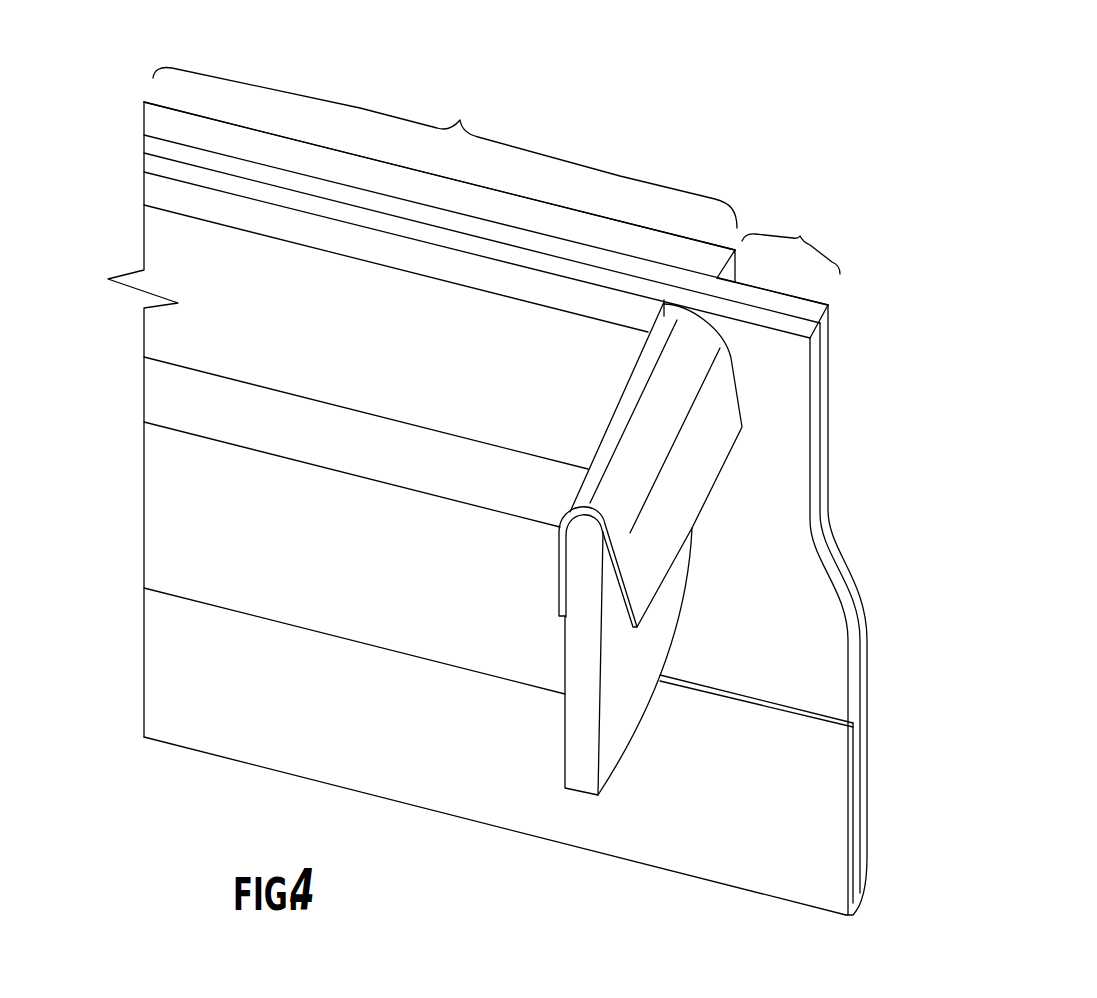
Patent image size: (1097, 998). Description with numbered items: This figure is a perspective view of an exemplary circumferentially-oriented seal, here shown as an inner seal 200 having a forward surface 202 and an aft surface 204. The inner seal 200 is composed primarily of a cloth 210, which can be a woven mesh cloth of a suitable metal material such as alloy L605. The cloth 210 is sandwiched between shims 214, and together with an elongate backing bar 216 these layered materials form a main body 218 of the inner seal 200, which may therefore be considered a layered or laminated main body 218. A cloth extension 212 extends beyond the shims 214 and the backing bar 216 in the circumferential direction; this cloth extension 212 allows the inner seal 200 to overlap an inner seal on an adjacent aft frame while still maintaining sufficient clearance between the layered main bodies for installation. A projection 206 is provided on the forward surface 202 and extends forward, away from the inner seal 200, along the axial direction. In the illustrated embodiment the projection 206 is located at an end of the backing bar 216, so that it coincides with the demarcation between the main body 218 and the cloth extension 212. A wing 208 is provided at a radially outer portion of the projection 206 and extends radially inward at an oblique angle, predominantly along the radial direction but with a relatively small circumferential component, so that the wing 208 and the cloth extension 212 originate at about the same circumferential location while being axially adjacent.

The inner seal 200 is at (817, 90).
The forward surface 202 is at (345, 732).
The aft surface 204 is at (862, 577).
The projection 206 is at (577, 777).
The wing 208 is at (707, 443).
The cloth 210 is at (152, 146).
The cloth extension 212 is at (778, 268).
The shims 214 is at (153, 121).
The backing bar 216 is at (166, 555).
The main body 218 is at (445, 147).